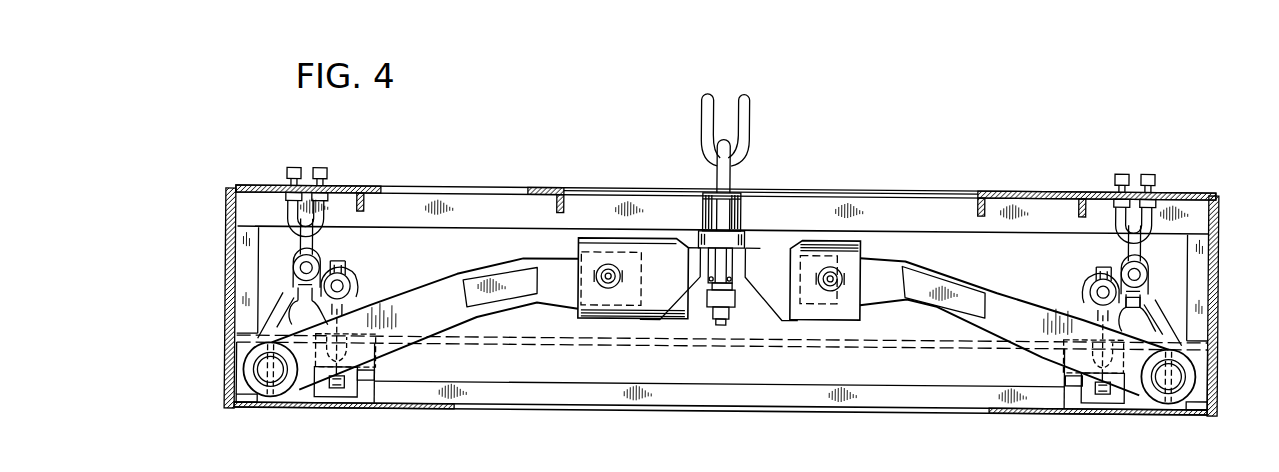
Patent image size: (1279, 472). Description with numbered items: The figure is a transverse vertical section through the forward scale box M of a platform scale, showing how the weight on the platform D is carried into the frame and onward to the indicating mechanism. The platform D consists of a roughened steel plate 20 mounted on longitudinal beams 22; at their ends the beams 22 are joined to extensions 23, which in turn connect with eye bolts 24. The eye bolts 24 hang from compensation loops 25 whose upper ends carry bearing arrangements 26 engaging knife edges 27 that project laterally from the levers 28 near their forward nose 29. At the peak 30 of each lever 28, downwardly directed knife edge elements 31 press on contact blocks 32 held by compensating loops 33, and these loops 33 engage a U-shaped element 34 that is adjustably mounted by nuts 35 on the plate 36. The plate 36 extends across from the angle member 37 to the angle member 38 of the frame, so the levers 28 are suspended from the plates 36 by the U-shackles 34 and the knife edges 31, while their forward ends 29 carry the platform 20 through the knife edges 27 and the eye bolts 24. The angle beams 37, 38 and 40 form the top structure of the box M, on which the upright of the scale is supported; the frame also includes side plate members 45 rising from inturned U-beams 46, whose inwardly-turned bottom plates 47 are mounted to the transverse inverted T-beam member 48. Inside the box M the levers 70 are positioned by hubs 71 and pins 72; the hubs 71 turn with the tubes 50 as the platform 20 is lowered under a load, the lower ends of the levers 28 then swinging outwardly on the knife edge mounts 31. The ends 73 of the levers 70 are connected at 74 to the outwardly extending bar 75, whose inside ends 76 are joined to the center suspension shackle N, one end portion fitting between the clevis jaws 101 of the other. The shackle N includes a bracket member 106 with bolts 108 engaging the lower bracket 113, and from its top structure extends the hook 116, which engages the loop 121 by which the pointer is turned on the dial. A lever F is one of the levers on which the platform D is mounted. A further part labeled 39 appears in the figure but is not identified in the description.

The roughened steel plate 20 is at (712, 342).
The longitudinal beams 22 is at (325, 401).
The extensions 23 is at (366, 379).
The eye bolts 24 is at (386, 323).
The compensation loops 25 is at (312, 306).
The bearing arrangements 26 is at (343, 269).
The knife edges 27 is at (352, 290).
The levers 28 is at (281, 301).
The forward nose 29 is at (358, 276).
The peak 30 is at (322, 259).
The knife edge elements 31 is at (297, 267).
The contact blocks 32 is at (1134, 300).
The compensating loops 33 is at (314, 246).
The U-shaped element 34 is at (287, 216).
The nuts 35 is at (306, 172).
The plate 36 is at (263, 190).
The angle member 37 is at (368, 196).
The angle member 38 is at (230, 195).
The bolt 39 is at (345, 397).
The angle beam 40 is at (562, 193).
The side plate members 45 is at (233, 300).
The U-beams 46 is at (228, 368).
The bottom plates 47 is at (448, 413).
The inverted T-beam member 48 is at (630, 401).
The tubes 50 is at (262, 372).
The levers 70 is at (452, 278).
The hubs 71 is at (258, 390).
The pins 72 is at (280, 393).
The ends 73 is at (577, 302).
The connection 74 is at (608, 290).
The bar 75 is at (692, 292).
The inside ends 76 is at (698, 250).
The clevis jaws 101 is at (704, 267).
The bracket member 106 is at (742, 198).
The bolts 108 is at (705, 197).
The lower bracket 113 is at (736, 292).
The hook 116 is at (712, 171).
The loop 121 is at (750, 113).
The lever F is at (282, 280).
The center suspension shackle N is at (735, 166).
The forward box M is at (931, 190).
The platform D is at (949, 343).